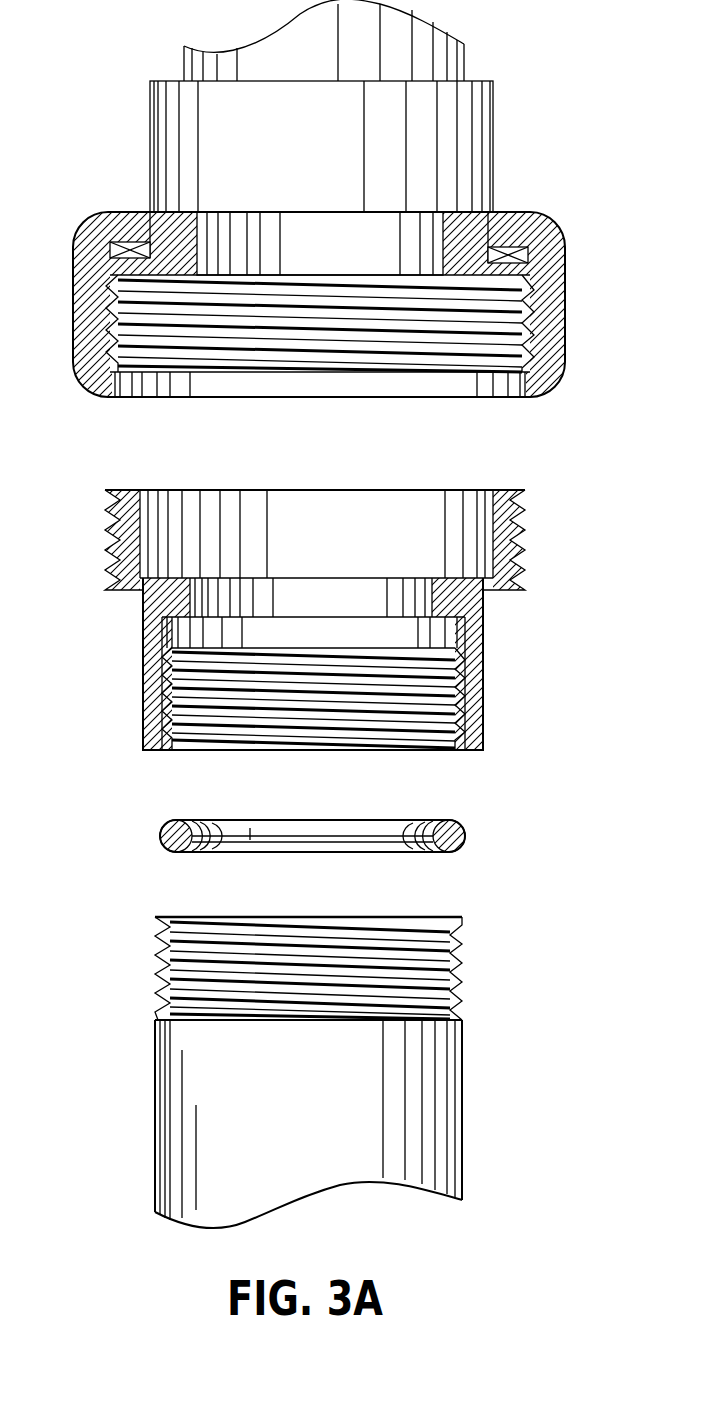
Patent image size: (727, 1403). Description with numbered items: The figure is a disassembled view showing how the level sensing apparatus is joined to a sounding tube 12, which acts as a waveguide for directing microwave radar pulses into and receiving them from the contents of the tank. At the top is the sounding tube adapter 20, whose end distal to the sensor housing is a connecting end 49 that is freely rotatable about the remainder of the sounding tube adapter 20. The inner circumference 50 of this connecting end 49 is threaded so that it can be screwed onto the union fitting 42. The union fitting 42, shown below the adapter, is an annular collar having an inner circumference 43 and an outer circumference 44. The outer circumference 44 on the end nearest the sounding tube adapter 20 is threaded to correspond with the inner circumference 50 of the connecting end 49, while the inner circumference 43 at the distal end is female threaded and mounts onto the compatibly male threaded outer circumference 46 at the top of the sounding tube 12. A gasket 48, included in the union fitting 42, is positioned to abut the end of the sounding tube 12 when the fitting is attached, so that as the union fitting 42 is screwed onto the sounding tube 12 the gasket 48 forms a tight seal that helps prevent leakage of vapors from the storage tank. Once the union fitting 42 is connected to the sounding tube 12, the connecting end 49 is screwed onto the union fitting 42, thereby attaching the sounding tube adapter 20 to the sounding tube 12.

The sounding tube adapter 20 is at (124, 146).
The connecting end 49 is at (548, 312).
The inner circumference 50 is at (145, 370).
The outer circumference 44 is at (528, 535).
The union fitting 42 is at (478, 668).
The inner circumference 43 is at (437, 745).
The gasket 48 is at (158, 833).
The outer circumference 46 is at (158, 958).
The sounding tube 12 is at (178, 1108).